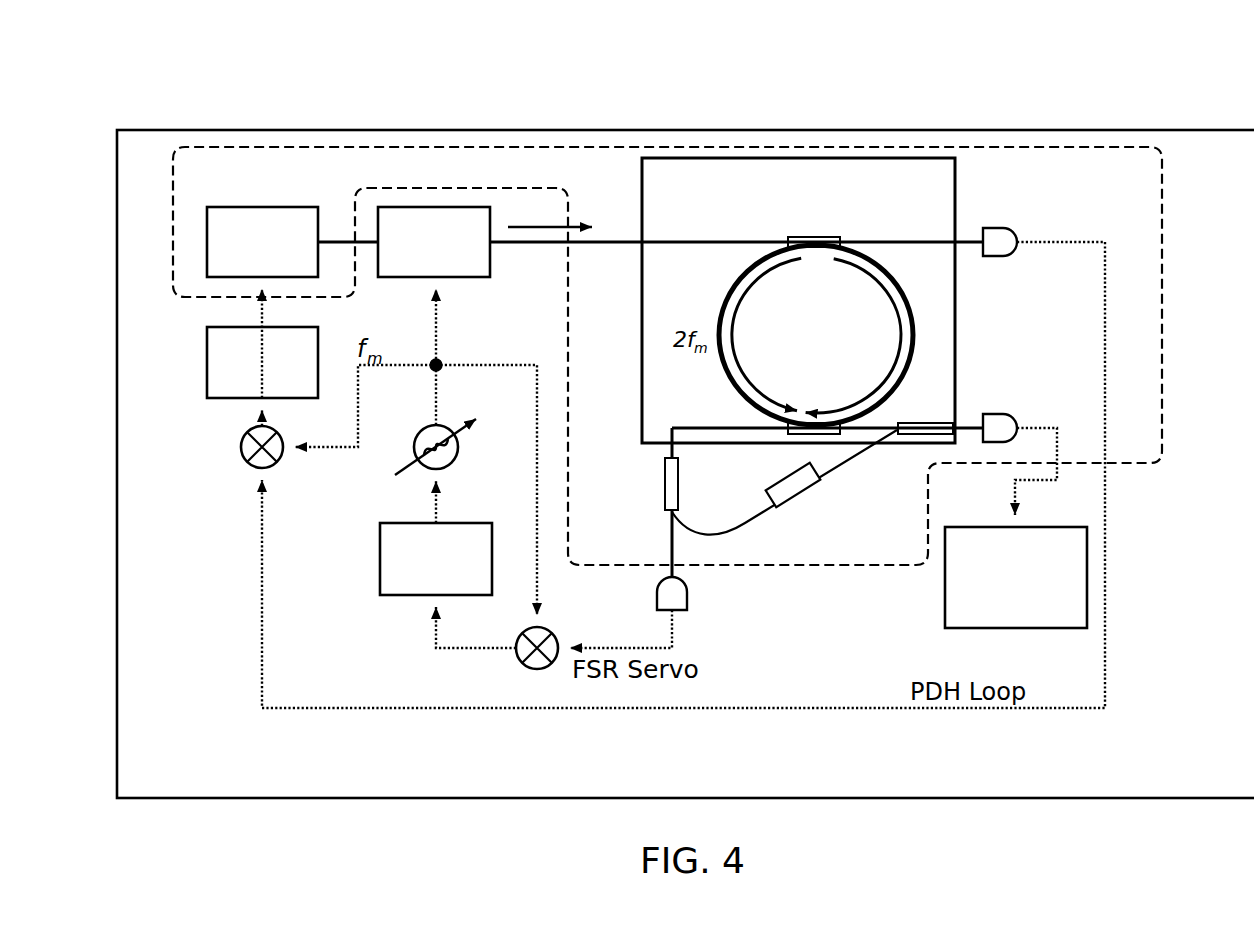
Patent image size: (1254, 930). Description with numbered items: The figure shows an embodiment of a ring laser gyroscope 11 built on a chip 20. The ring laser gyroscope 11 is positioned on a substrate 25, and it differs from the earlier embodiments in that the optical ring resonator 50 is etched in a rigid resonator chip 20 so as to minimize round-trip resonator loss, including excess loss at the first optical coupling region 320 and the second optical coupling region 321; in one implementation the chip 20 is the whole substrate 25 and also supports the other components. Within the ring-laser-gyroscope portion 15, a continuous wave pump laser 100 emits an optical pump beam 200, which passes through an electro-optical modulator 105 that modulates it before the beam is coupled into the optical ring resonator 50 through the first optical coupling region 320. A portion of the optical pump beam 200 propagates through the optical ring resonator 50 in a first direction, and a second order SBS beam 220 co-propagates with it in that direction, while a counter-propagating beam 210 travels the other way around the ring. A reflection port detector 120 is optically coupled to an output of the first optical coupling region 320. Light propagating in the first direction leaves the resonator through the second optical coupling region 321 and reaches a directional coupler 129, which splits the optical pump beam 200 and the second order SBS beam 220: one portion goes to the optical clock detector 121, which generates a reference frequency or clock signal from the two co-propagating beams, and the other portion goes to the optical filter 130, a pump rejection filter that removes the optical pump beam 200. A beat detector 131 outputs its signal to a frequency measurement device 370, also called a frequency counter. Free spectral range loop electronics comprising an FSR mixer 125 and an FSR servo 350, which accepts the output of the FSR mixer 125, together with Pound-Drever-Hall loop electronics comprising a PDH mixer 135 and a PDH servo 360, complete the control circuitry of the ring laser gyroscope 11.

The ring laser gyroscope 11 is at (270, 790).
The ring-laser-gyroscope portion 15 is at (963, 147).
The rigid resonator chip 20 is at (787, 158).
The substrate 25 is at (438, 147).
The optical ring resonator 50 is at (722, 288).
The pump laser 100 is at (288, 270).
The electro-optical modulator 105 is at (460, 270).
The reflection port detector 120 is at (1000, 228).
The optical clock detector 121 is at (657, 598).
The FSR mixer 125 is at (520, 660).
The directional coupler 129 is at (665, 485).
The optical filter 130 is at (797, 500).
The beat detector 131 is at (1000, 414).
The PDH mixer 135 is at (241, 447).
The optical pump beam 200 is at (535, 227).
The counter-clockwise beam 210 is at (745, 385).
The second order SBS beam 220 is at (892, 293).
The first optical coupling region 320 is at (815, 237).
The second optical coupling region 321 is at (800, 435).
The FSR servo 350 is at (461, 588).
The PDH servo 360 is at (288, 391).
The frequency measurement device 370 is at (1042, 620).